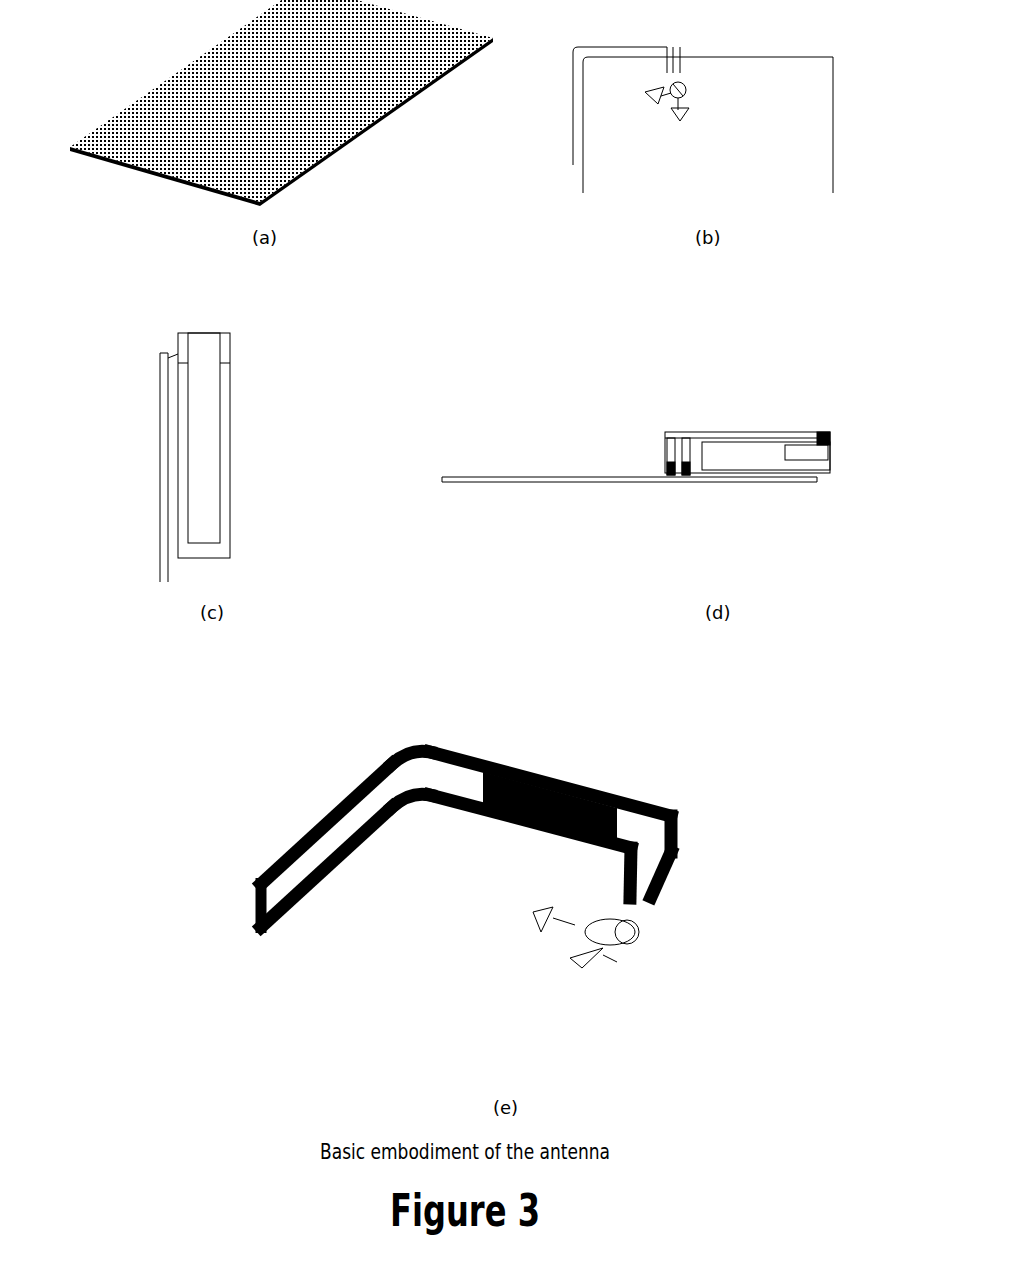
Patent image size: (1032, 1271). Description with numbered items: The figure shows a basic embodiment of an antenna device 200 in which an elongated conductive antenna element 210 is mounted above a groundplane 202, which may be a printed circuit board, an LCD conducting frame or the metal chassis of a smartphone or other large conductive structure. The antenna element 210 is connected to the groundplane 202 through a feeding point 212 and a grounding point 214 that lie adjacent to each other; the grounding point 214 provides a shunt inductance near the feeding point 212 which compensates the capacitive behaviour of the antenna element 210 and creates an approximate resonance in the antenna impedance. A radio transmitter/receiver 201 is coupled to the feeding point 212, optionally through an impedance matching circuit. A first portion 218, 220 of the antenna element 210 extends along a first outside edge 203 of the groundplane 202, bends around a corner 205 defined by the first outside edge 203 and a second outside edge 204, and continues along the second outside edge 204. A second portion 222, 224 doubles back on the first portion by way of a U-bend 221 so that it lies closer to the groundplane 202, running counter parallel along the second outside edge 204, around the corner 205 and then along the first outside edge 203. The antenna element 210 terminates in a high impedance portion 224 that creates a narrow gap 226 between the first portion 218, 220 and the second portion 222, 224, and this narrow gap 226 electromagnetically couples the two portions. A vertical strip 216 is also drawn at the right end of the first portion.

The antenna device 200 is at (788, 829).
The radio transmitter/receiver 201 is at (627, 945).
The groundplane 202 is at (745, 1004).
The first outside edge 203 is at (740, 917).
The second outside edge 204 is at (212, 1022).
The corner 205 is at (419, 867).
The antenna element 210 is at (487, 800).
The feeding point 212 is at (660, 887).
The grounding point 214 is at (622, 890).
The vertical strip portion 216 is at (678, 822).
The first portion 218 is at (588, 790).
The first portion 220 is at (308, 827).
The U-bend 221 is at (255, 910).
The second portion 222 is at (302, 893).
The high impedance portion 224 is at (537, 800).
The narrow gap 226 is at (487, 752).